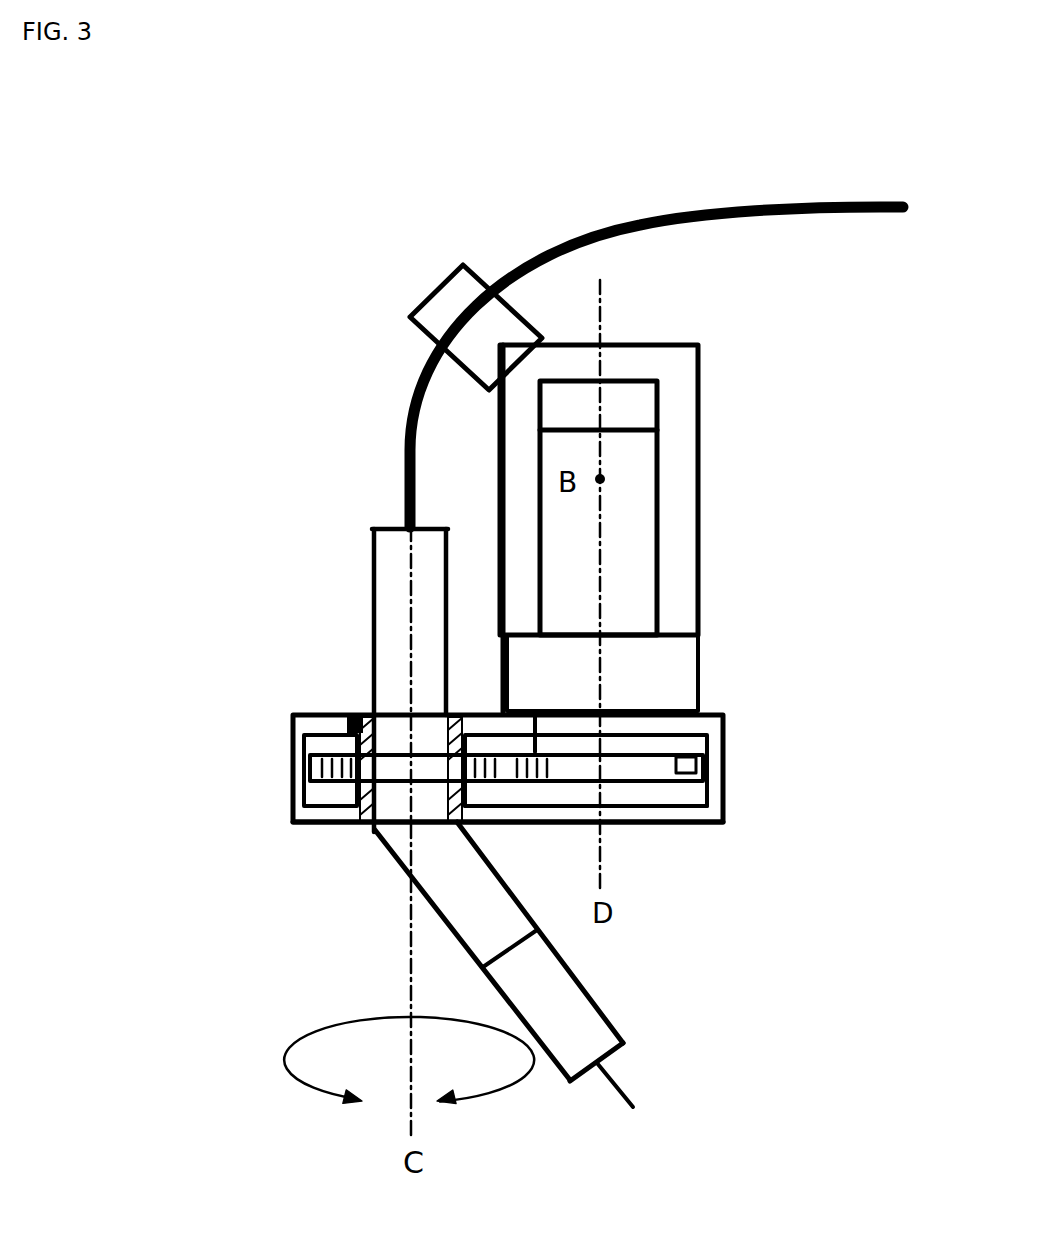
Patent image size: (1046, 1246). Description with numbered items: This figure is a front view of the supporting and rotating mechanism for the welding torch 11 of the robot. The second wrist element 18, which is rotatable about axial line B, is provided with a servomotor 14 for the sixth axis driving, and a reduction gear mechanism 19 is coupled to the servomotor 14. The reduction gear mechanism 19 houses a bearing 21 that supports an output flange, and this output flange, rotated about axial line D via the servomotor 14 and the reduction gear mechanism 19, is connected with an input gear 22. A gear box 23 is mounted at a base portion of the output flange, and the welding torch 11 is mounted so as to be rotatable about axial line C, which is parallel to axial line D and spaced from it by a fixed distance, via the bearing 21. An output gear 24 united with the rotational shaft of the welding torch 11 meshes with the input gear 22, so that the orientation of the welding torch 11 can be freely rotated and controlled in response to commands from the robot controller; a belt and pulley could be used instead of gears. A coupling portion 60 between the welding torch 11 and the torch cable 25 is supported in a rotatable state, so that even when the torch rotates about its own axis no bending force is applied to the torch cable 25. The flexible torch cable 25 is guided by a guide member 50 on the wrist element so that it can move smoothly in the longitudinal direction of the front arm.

The welding torch 11 is at (382, 583).
The servomotor 14 is at (631, 503).
The second wrist element 18 is at (686, 585).
The reduction gear mechanism 19 is at (668, 672).
The bearing 21 is at (364, 712).
The input gear 22 is at (698, 778).
The gear box 23 is at (644, 831).
The output gear 24 is at (321, 792).
The torch cable 25 is at (403, 427).
The guide member 50 is at (428, 286).
The coupling portion 60 is at (400, 523).